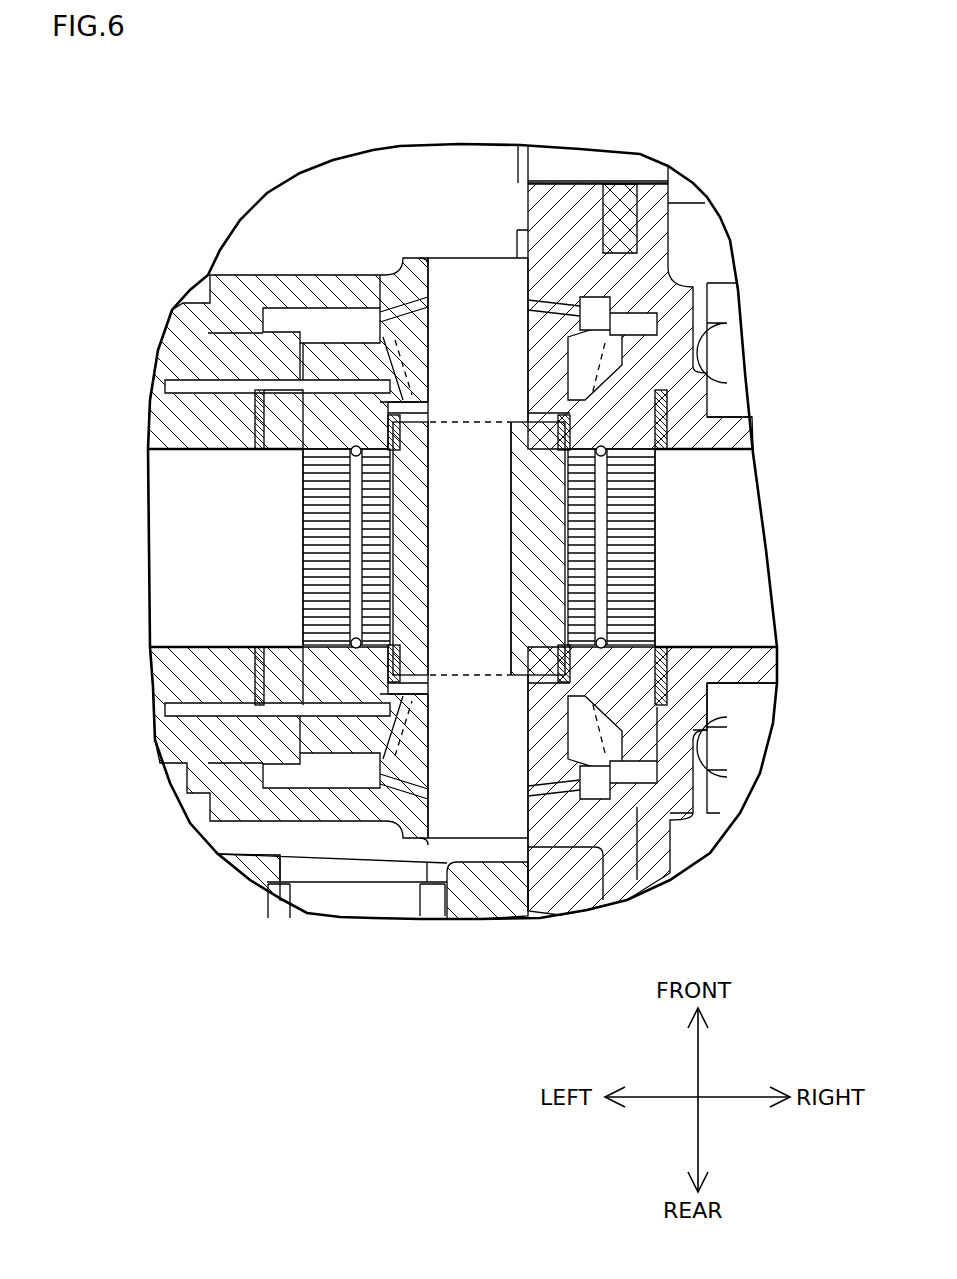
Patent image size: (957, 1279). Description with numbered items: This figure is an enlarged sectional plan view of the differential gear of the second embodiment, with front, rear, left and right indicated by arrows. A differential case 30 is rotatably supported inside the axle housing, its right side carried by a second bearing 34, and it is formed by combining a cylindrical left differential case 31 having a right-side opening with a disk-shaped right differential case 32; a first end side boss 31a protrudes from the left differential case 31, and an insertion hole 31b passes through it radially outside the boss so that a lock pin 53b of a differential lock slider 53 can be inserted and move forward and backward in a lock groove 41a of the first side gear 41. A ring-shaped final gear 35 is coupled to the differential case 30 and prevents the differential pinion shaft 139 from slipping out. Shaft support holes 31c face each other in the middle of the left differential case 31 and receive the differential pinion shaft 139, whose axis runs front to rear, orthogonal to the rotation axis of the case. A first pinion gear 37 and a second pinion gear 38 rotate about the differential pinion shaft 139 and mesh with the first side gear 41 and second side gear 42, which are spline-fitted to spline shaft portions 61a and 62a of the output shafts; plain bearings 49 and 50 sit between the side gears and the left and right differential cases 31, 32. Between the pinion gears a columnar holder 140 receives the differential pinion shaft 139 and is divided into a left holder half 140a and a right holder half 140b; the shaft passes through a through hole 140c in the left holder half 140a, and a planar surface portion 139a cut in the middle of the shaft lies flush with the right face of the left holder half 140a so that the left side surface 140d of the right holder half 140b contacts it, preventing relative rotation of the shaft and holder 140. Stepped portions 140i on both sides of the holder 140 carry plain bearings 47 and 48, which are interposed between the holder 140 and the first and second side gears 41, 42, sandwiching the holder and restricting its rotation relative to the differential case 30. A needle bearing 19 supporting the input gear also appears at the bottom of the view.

The needle bearing 19 is at (440, 905).
The differential case 30 is at (774, 205).
The left differential case 31 is at (615, 240).
The first end side boss 31a is at (178, 415).
The insertion hole 31b is at (255, 328).
The shaft support hole 31c is at (446, 258).
The right differential case 32 is at (650, 290).
The second bearing 34 is at (735, 790).
The final gear 35 is at (565, 880).
The first pinion gear 37 is at (410, 320).
The second pinion gear 38 is at (637, 830).
The first side gear 41 is at (312, 390).
The lock groove 41a is at (277, 720).
The second side gear 42 is at (680, 420).
The plain bearing 47 is at (395, 662).
The plain bearing 48 is at (560, 670).
The plain bearing 49 is at (256, 452).
The plain bearing 50 is at (660, 452).
The differential lock slider 53 is at (205, 360).
The lock pin 53b is at (275, 452).
The spline shaft portion 61a is at (200, 585).
The spline shaft portion 62a is at (745, 535).
The differential pinion shaft 139 is at (500, 812).
The planar surface portion 139a is at (512, 495).
The holder 140 is at (537, 547).
The left holder half 140a is at (610, 580).
The right holder half 140b is at (600, 620).
The through hole 140c is at (430, 610).
The left side surface 140d is at (512, 515).
The stepped portion 140i is at (560, 413).